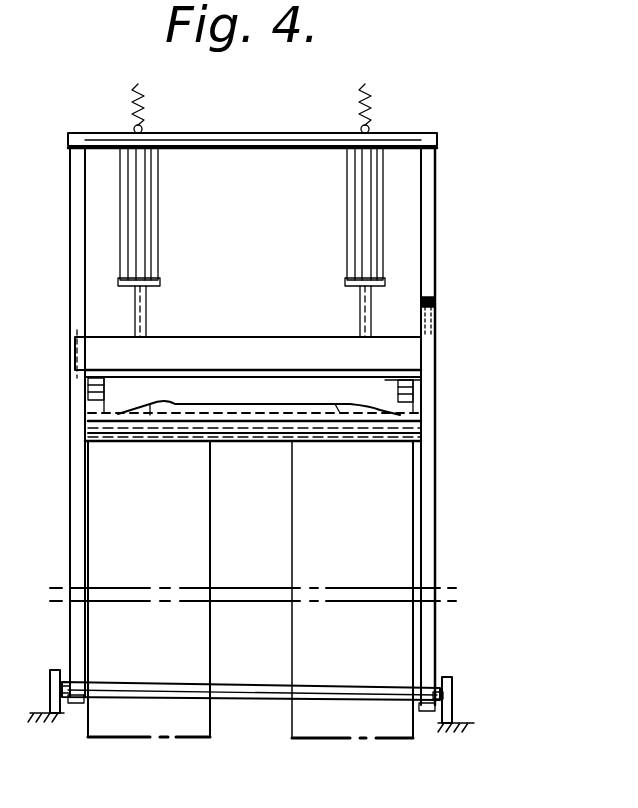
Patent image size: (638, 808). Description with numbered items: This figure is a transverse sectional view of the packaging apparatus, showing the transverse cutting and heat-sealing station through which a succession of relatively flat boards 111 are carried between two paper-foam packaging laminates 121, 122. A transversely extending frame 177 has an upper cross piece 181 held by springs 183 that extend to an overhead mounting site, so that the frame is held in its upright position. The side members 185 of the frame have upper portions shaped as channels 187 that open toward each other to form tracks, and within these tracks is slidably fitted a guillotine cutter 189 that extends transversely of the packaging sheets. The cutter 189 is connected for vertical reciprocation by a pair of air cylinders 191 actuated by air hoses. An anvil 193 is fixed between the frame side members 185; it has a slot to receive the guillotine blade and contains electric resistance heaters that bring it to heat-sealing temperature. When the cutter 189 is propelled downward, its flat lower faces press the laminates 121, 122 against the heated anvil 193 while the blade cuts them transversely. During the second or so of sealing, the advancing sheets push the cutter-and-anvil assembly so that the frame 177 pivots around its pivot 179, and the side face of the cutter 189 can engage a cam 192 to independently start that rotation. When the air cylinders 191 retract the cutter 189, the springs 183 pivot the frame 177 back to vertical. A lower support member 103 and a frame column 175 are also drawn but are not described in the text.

The lower support boxes 103 is at (322, 632).
The flat board 111 is at (245, 425).
The paper-foam packaging laminate 121 is at (228, 441).
The paper-foam packaging laminate 122 is at (150, 421).
The frame column 175 is at (437, 272).
The transversely extending frame 177 is at (452, 160).
The pivot 179 is at (263, 700).
The upper cross piece 181 is at (337, 140).
The spring 183 is at (144, 113).
The side member 185 is at (430, 590).
The channel 187 is at (424, 324).
The guillotine cutter 189 is at (413, 384).
The air cylinder 191 is at (365, 210).
The cam 192 is at (415, 400).
The anvil 193 is at (322, 441).